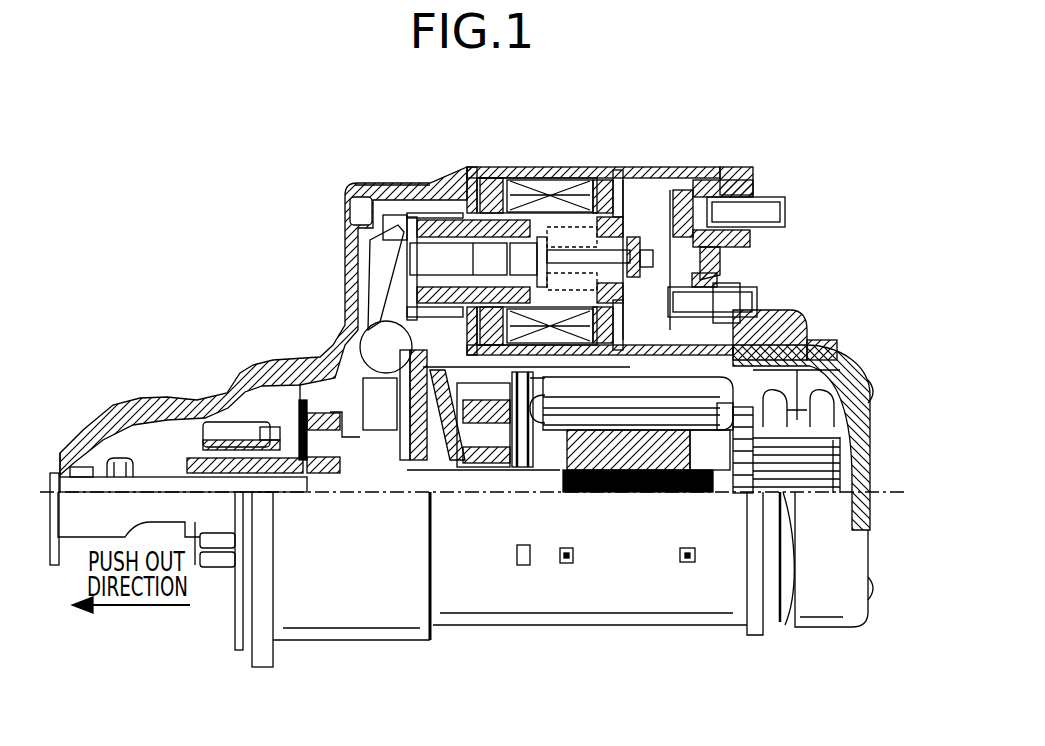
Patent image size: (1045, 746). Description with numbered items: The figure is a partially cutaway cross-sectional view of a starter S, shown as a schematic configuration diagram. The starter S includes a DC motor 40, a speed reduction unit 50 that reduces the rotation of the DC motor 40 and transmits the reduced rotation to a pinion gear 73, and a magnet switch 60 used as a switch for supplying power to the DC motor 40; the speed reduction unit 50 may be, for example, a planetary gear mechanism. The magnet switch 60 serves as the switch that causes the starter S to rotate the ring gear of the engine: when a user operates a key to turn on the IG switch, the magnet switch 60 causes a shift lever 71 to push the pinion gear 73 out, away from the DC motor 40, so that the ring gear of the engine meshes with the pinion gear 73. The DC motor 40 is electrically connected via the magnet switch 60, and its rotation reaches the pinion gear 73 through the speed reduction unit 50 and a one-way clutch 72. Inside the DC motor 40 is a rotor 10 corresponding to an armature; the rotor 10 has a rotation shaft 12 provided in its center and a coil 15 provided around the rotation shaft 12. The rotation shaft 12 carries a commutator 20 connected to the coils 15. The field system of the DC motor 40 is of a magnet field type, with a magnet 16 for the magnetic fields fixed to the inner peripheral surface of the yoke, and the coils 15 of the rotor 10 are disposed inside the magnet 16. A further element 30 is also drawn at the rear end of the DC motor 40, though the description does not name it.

The starter S is at (273, 204).
The rotor 10 is at (653, 493).
The rotation shaft 12 is at (630, 493).
The coil 15 is at (613, 493).
The magnet 16 is at (563, 493).
The commutator 20 is at (845, 470).
The end frame 30 is at (797, 540).
The DC motor 40 is at (690, 584).
The speed reduction unit 50 is at (497, 495).
The magnet switch 60 is at (569, 163).
The shift lever 71 is at (377, 296).
The one-way clutch 72 is at (283, 372).
The pinion gear 73 is at (218, 430).